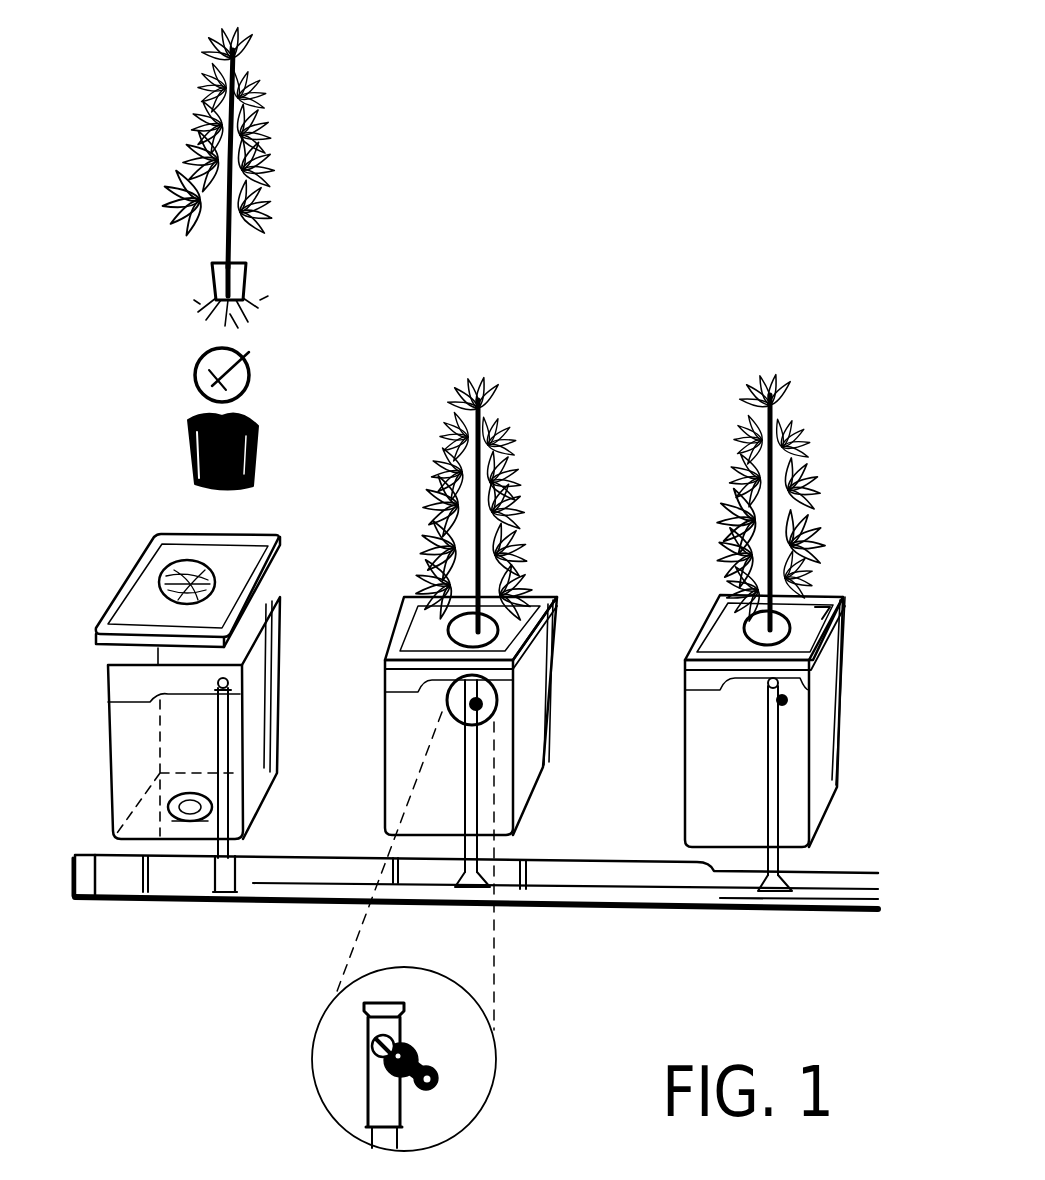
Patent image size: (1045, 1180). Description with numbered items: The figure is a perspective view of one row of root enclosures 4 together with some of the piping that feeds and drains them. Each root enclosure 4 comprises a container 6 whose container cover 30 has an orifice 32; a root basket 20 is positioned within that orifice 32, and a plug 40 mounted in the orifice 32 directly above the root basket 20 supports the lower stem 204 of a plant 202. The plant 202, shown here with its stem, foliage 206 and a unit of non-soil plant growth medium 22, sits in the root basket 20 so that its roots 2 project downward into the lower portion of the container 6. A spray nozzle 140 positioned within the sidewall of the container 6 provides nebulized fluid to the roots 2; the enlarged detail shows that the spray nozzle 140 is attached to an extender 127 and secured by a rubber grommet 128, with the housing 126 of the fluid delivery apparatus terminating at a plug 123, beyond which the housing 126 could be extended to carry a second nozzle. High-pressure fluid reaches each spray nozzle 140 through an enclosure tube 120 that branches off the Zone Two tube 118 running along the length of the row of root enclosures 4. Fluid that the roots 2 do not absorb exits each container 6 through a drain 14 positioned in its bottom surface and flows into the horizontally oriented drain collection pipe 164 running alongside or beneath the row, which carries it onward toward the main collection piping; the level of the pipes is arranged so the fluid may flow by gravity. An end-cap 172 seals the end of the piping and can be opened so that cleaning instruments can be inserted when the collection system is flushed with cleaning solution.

The roots 2 is at (250, 292).
The non-soil plant growth medium 22 is at (213, 263).
The lower stem 204 is at (240, 248).
The plant foliage top 206 is at (243, 82).
The plant 202 is at (280, 131).
The plug 40 is at (252, 376).
The root basket 20 is at (258, 453).
The container cover 30 is at (280, 543).
The orifice 32 is at (196, 578).
The container 6 is at (283, 703).
The enclosure tube 120 is at (222, 785).
The drain 14 is at (200, 805).
The end-cap 172 is at (75, 902).
The Zone Two tube 118 is at (260, 903).
The drain collection pipe 164 is at (593, 873).
The root enclosure 4 is at (557, 600).
The housing 126 is at (370, 1085).
The plug 123 is at (376, 1003).
The extender 127 is at (372, 1047).
The rubber grommet 128 is at (412, 1041).
The spray nozzle 140 is at (434, 1068).